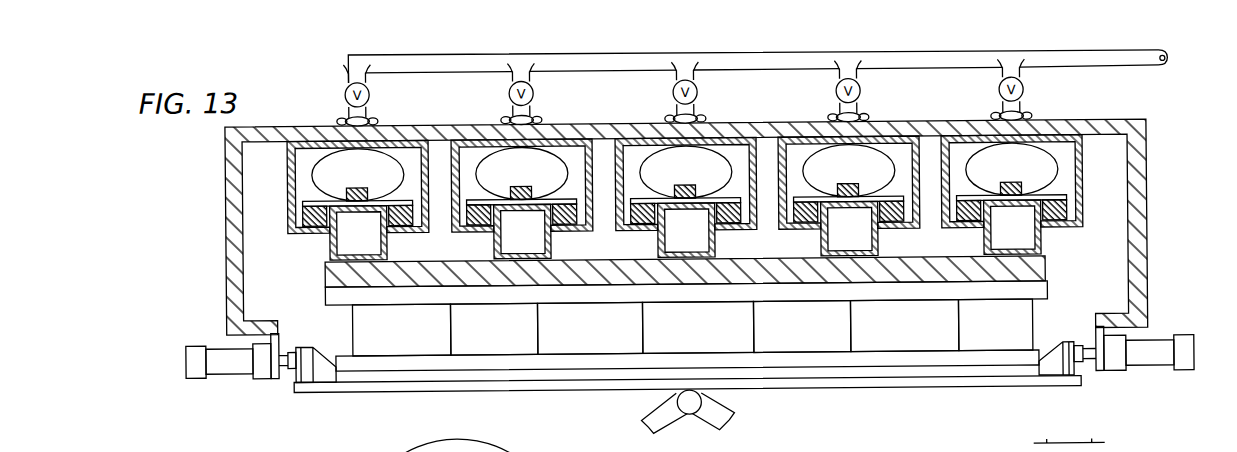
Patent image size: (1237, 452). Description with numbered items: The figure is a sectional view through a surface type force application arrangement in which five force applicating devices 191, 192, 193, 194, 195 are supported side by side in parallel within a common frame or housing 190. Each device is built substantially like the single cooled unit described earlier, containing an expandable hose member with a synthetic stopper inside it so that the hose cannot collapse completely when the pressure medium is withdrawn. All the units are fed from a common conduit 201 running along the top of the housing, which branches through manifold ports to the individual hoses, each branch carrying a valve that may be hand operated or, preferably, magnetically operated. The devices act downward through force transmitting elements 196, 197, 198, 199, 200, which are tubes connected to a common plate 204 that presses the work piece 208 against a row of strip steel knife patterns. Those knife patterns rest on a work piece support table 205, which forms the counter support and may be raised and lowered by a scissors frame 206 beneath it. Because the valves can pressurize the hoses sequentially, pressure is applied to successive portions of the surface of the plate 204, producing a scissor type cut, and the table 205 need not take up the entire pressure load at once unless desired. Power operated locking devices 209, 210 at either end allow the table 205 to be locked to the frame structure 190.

The common frame or housing 190 is at (1147, 150).
The force applicating device 191 is at (288, 219).
The force applicating device 192 is at (473, 236).
The force applicating device 193 is at (651, 236).
The force applicating device 194 is at (780, 220).
The force applicating device 195 is at (1081, 187).
The force transmitting element 196 is at (330, 247).
The force transmitting element 197 is at (548, 247).
The force transmitting element 198 is at (710, 248).
The force transmitting element 199 is at (876, 238).
The force transmitting element 200 is at (1043, 247).
The common conduit 201 is at (1098, 70).
The plate 204 is at (1040, 272).
The work piece support table 205 is at (883, 391).
The scissors frame 206 is at (652, 419).
The work piece 208 is at (327, 297).
The power operated locking 209 is at (260, 373).
The power operated locking 210 is at (1150, 367).